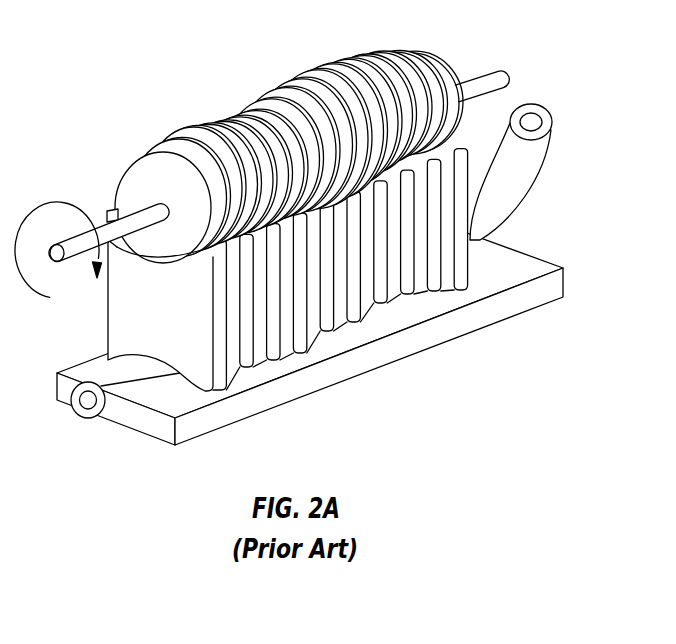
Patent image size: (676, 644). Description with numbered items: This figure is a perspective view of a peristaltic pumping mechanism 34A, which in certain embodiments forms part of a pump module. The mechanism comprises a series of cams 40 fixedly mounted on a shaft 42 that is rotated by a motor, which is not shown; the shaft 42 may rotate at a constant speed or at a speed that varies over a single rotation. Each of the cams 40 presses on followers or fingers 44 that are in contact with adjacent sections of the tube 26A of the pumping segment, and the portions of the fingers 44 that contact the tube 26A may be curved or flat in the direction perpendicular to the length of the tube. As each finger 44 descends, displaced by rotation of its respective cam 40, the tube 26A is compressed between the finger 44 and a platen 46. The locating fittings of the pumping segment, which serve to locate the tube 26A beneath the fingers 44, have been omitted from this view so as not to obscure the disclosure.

The peristaltic pumping mechanism 34A is at (289, 258).
The cams 40 is at (137, 180).
The shaft 42 is at (46, 204).
The fingers 44 is at (117, 313).
The platen 46 is at (423, 340).
The tube 26A is at (112, 402).